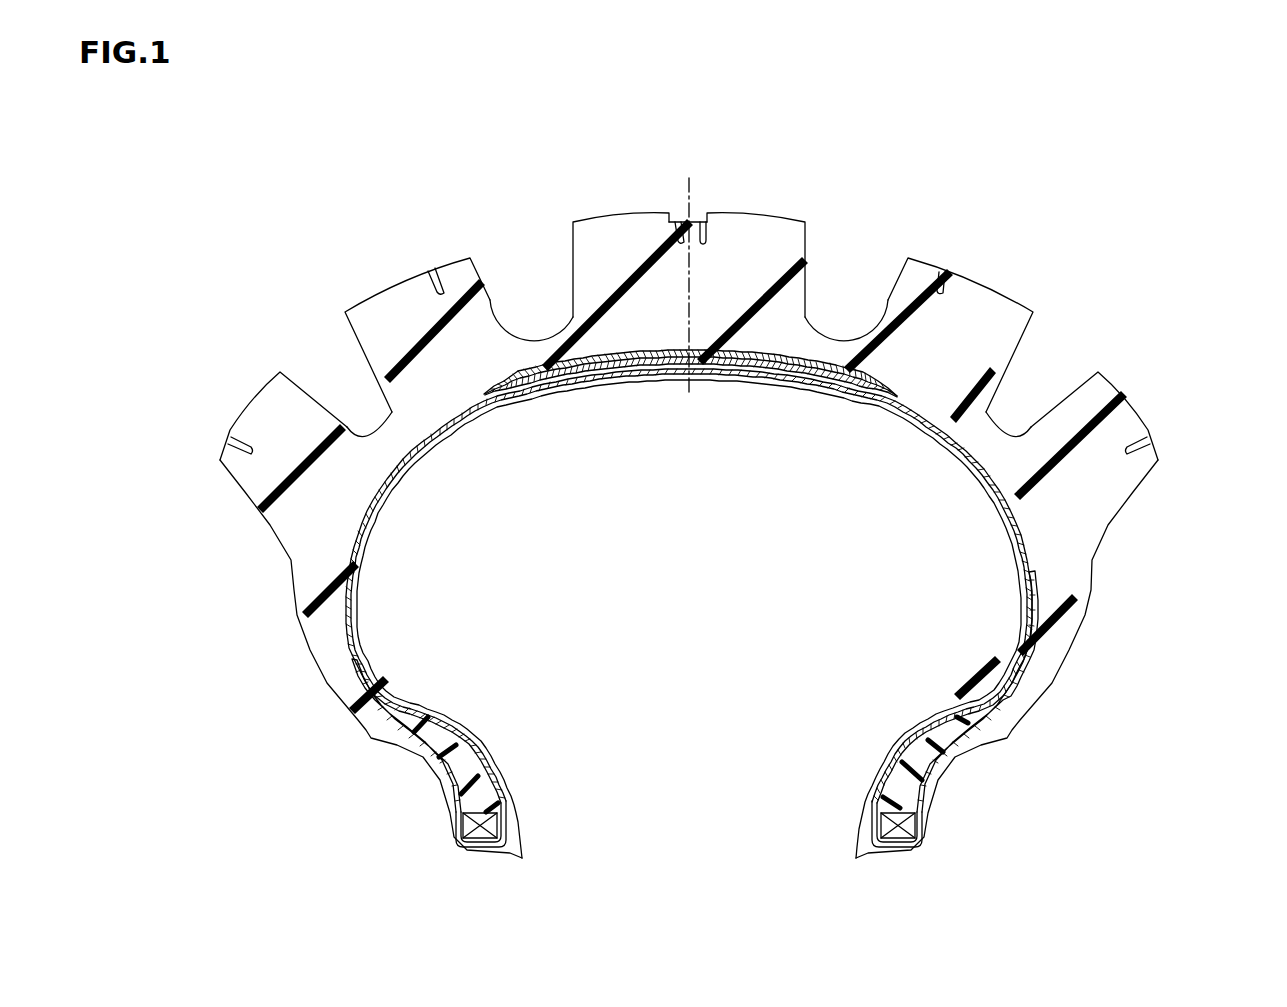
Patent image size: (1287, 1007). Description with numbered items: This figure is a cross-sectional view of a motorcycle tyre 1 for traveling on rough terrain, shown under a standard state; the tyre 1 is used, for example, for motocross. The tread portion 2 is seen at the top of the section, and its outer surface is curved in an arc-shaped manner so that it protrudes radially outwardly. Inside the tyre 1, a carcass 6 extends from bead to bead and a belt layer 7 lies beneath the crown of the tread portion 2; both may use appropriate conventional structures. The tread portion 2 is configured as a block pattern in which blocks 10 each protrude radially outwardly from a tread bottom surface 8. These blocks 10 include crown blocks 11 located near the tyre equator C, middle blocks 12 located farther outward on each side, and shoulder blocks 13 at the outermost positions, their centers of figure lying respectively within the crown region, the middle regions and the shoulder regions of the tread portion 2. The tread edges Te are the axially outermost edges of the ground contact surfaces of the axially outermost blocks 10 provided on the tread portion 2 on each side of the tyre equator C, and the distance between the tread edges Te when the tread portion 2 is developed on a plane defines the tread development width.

The motorcycle tyre for traveling on rough terrain 1 is at (1034, 245).
The tread portion 2 is at (765, 202).
The carcass 6 is at (1036, 583).
The belt layer 7 is at (740, 352).
The tread bottom surface 8 is at (538, 343).
The blocks 10 is at (380, 273).
The crown blocks 11 is at (625, 200).
The middle blocks 12 is at (983, 260).
The shoulder blocks 13 is at (241, 393).
The tyre equator C is at (688, 273).
The tread edges Te is at (220, 460).